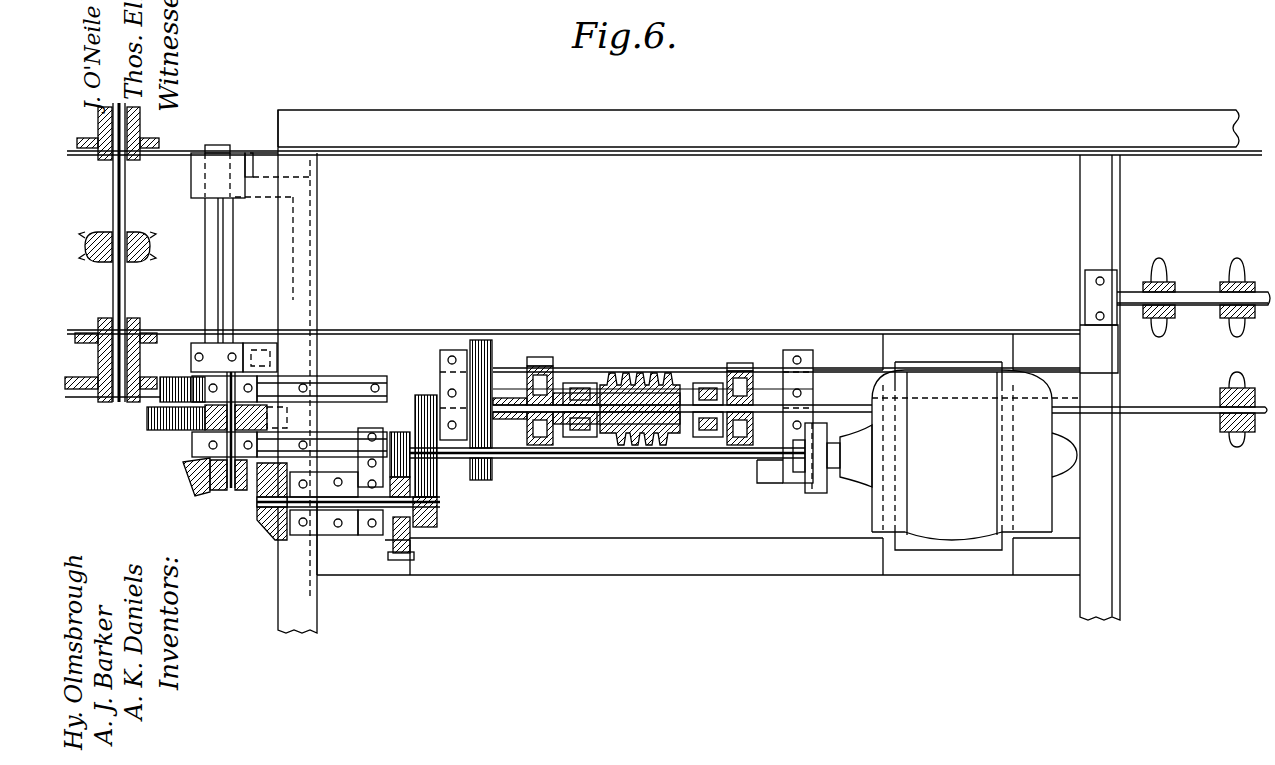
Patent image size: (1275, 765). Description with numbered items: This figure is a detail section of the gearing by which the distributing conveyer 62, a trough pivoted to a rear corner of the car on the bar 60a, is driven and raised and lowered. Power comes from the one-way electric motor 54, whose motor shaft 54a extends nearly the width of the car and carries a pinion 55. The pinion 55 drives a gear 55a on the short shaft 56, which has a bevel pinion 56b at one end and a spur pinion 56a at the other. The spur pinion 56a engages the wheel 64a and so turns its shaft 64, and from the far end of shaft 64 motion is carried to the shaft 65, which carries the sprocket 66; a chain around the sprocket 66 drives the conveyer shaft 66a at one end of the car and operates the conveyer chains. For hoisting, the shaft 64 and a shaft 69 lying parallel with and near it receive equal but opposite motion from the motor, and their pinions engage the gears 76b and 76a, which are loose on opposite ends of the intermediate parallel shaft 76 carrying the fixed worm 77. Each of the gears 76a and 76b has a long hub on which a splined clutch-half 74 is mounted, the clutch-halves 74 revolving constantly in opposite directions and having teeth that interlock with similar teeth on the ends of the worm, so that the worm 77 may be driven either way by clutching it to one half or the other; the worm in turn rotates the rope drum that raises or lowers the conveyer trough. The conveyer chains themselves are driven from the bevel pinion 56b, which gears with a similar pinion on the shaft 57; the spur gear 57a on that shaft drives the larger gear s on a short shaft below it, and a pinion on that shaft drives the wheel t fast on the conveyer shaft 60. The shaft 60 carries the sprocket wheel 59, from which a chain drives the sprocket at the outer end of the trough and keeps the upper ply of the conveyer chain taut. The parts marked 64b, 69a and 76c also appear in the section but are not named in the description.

The distributing conveyer 62 is at (664, 371).
The sprocket wheel 59 is at (140, 240).
The conveyer shaft 60 is at (125, 297).
The bar 60a is at (213, 246).
The wheel t is at (185, 378).
The gear s is at (147, 420).
The spur gear 57a is at (205, 430).
The shaft 57 is at (230, 478).
The bevel pinion 56b is at (270, 527).
The spur pinion 56a is at (440, 490).
The short shaft 56 is at (352, 545).
The pinion 55 is at (400, 432).
The gear 55a is at (413, 540).
The wheel 64a is at (420, 395).
The gear 64b is at (495, 473).
The shaft 64 is at (510, 450).
The gear 69a is at (479, 340).
The collar 76c is at (487, 410).
The intermediate parallel shaft 76 is at (652, 412).
The worm 77 is at (633, 390).
The gear 76a is at (538, 357).
The clutch-halves 74 is at (575, 383).
The shaft 69 is at (683, 372).
The gear 76b is at (752, 365).
The motor shaft 54a is at (712, 455).
The electric motor 54 is at (974, 456).
The shaft 65 is at (850, 405).
The sprocket 66 is at (1242, 418).
The conveyer shaft 66a is at (1200, 308).